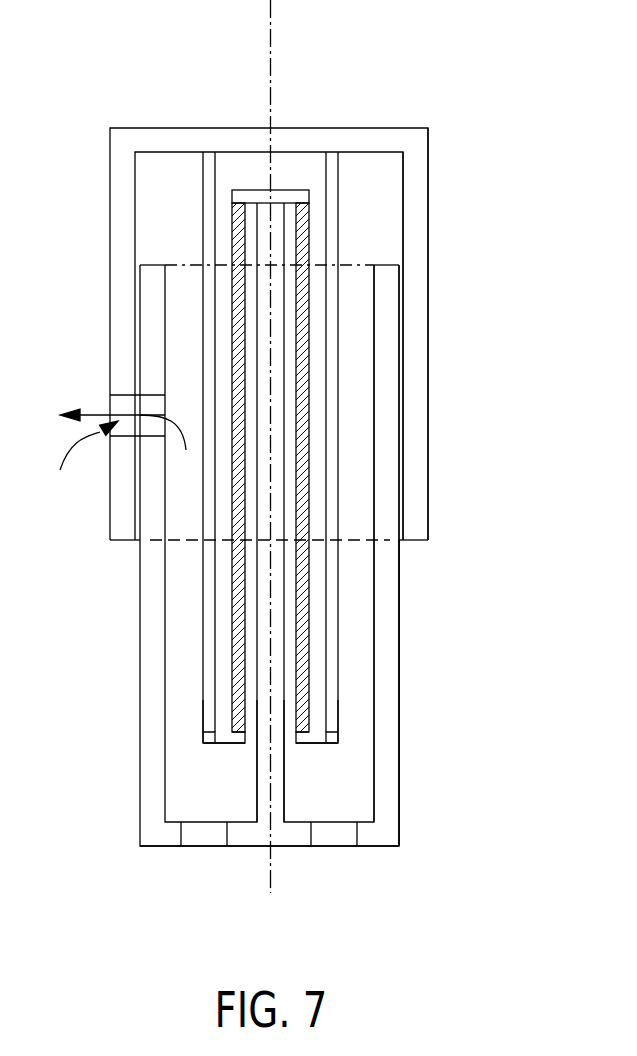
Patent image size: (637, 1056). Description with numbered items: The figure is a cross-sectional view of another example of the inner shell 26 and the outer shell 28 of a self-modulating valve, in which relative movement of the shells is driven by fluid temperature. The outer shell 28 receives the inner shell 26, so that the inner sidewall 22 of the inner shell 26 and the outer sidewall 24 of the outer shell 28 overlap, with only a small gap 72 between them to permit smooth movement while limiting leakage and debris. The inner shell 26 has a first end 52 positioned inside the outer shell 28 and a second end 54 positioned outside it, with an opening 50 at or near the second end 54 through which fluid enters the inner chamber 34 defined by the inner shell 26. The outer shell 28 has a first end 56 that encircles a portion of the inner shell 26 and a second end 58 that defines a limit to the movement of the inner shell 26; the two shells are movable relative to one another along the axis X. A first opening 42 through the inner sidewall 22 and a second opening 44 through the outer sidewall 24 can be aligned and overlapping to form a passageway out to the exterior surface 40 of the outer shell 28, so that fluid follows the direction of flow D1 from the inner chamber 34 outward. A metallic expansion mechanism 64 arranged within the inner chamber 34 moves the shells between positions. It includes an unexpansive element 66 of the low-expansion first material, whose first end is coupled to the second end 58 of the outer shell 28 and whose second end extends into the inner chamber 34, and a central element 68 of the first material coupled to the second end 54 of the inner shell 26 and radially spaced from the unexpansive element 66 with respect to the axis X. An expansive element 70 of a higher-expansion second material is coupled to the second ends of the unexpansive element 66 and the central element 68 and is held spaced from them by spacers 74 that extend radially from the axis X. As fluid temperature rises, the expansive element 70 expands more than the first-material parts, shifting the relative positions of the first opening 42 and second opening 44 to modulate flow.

The inner sidewall 22 is at (388, 435).
The outer sidewall 24 is at (415, 358).
The inner shell 26 is at (402, 735).
The outer shell 28 is at (108, 322).
The inner chamber 34 is at (345, 436).
The exterior surface 40 is at (269, 470).
The first opening 42 is at (172, 409).
The second opening 44 is at (84, 467).
The opening 50 is at (206, 855).
The first end 52 is at (296, 559).
The second end 54 is at (153, 847).
The first end 56 is at (126, 545).
The second end 58 is at (267, 349).
The metallic expansion mechanism 64 is at (350, 166).
The unexpansive element 66 is at (202, 705).
The central element 68 is at (278, 803).
The expansive element 70 is at (232, 610).
The gap 72 is at (409, 562).
The spacers 74 is at (295, 190).
The direction of fluid flow D1 is at (102, 412).
The axis X is at (269, 470).